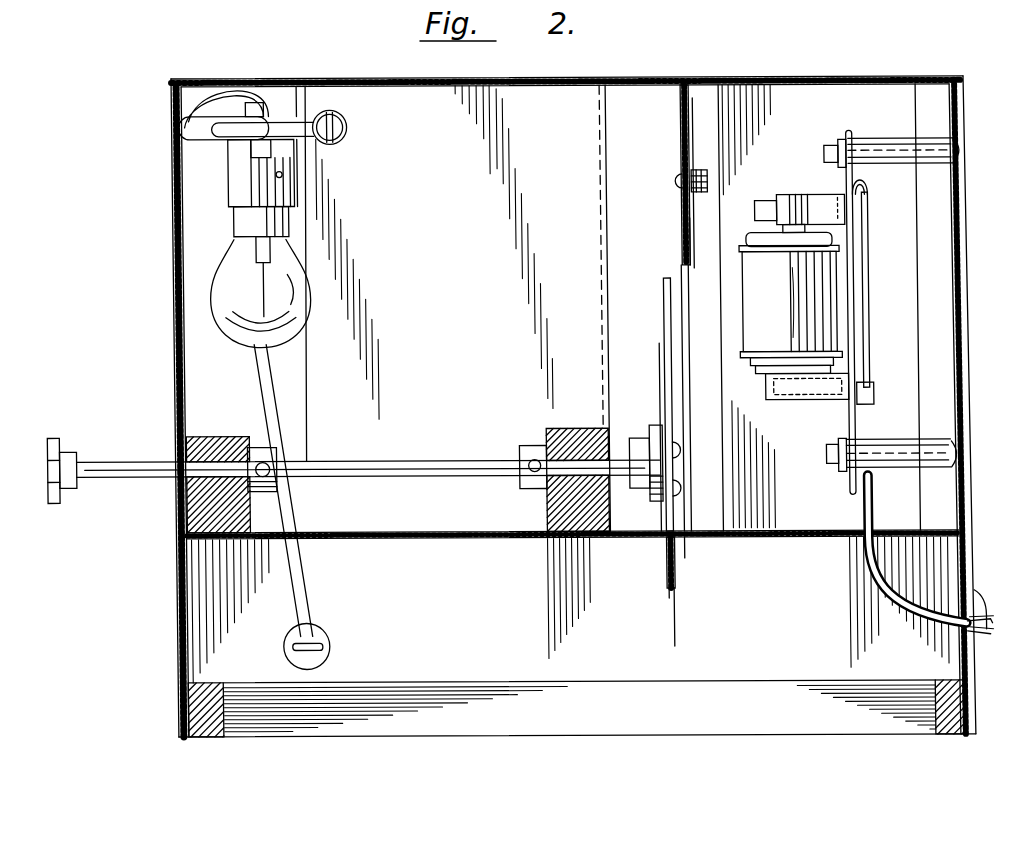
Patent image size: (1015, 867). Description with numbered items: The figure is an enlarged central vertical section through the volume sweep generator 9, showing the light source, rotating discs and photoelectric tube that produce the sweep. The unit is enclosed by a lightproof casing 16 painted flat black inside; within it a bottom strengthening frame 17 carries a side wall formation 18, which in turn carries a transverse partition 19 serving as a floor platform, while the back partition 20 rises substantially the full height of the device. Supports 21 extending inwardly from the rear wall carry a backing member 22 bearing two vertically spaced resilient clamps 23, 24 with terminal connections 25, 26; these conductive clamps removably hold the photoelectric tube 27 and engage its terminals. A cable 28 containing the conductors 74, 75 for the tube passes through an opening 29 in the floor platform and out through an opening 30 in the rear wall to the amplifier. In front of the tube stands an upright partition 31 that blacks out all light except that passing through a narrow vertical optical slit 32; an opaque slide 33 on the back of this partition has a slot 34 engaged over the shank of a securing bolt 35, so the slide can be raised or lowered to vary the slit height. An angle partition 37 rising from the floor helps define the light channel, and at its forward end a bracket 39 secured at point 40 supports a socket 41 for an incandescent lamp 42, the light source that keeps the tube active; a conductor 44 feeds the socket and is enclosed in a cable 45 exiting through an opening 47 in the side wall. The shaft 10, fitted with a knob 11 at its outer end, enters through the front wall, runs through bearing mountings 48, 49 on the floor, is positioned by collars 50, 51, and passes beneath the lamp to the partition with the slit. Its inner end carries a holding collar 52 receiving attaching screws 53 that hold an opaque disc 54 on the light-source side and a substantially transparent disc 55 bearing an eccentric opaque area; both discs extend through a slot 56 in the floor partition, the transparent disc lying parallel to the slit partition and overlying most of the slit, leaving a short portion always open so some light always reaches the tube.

The volume sweep generator 9 is at (670, 77).
The shaft 10 is at (97, 461).
The knob 11 is at (56, 440).
The casing 16 is at (172, 202).
The bottom strengthening frame 17 is at (423, 703).
The side wall formation 18 is at (530, 663).
The transverse partition 19 is at (470, 539).
The back partition 20 is at (950, 347).
The supports 21 is at (865, 150).
The backing member 22 is at (851, 273).
The resilient clamp 23 is at (772, 213).
The resilient clamp 24 is at (790, 398).
The terminal connection 25 is at (866, 190).
The terminal connection 26 is at (869, 403).
The photoelectric tube 27 is at (752, 300).
The cable 28 is at (878, 589).
The opening 29 is at (816, 534).
The opening 30 is at (951, 639).
The upright partition 31 is at (679, 138).
The optical slit 32 is at (663, 281).
The opaque slide 33 is at (691, 253).
The slot 34 is at (689, 148).
The securing bolt 35 is at (706, 180).
The angle partition 37 is at (532, 108).
The bracket 39 is at (296, 88).
The securing point 40 is at (342, 127).
The socket 41 is at (226, 170).
The incandescent lamp 42 is at (236, 262).
The electrical conductor 44 is at (248, 92).
The cable 45 is at (291, 589).
The opening 47 is at (313, 637).
The bearing mounting 48 is at (213, 436).
The bearing mounting 49 is at (567, 430).
The collar 50 is at (261, 451).
The collar 51 is at (524, 451).
The holding collar 52 is at (648, 430).
The attaching screws 53 is at (676, 488).
The opaque disc 54 is at (660, 559).
The disc 55 is at (666, 609).
The slot 56 is at (674, 537).
The conductor 74 is at (967, 598).
The conductor 75 is at (960, 643).